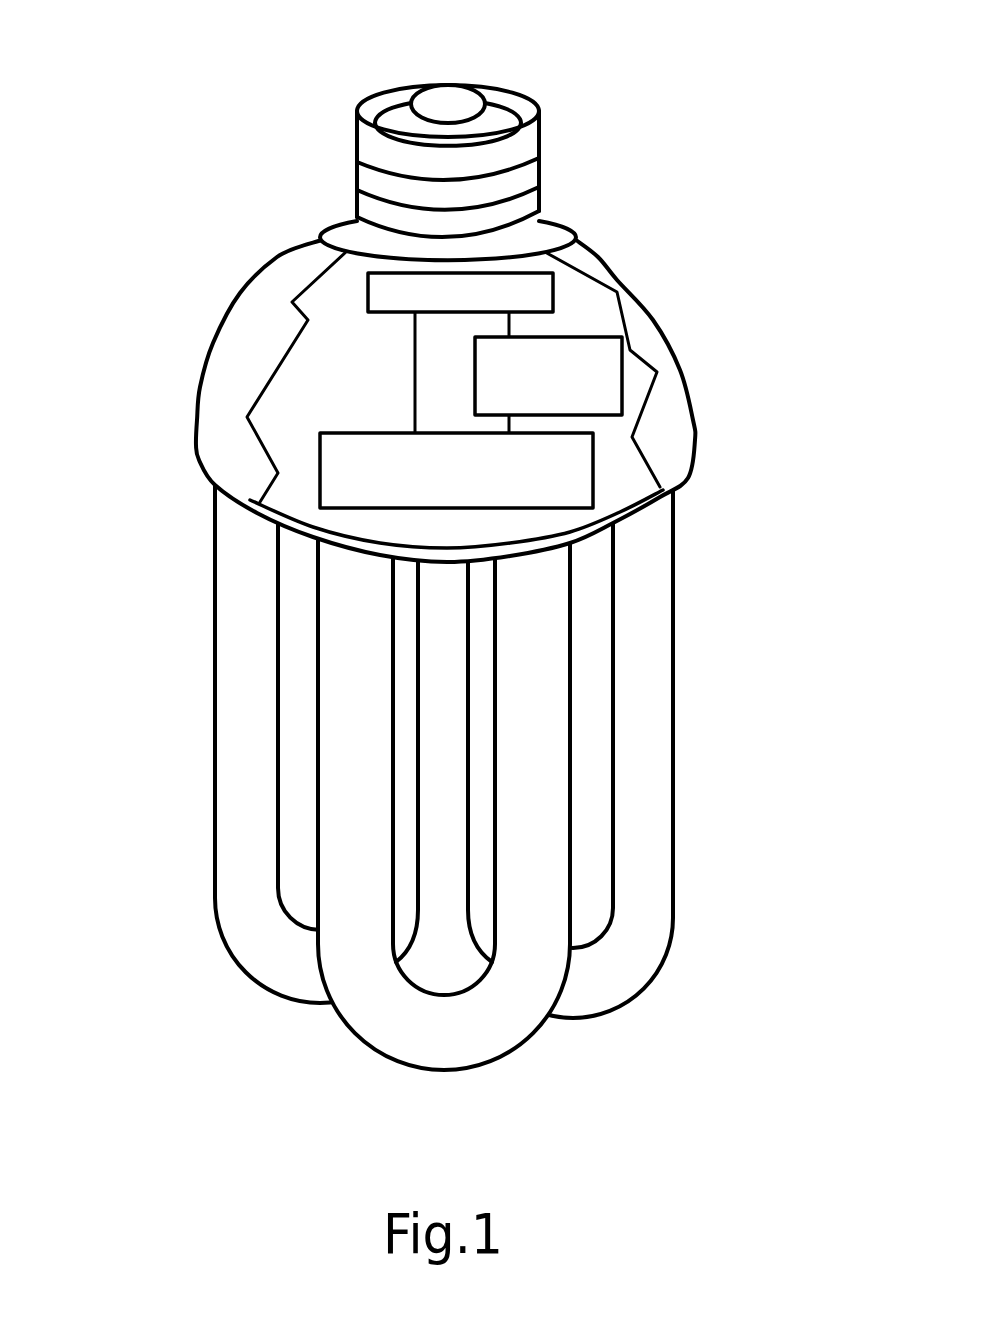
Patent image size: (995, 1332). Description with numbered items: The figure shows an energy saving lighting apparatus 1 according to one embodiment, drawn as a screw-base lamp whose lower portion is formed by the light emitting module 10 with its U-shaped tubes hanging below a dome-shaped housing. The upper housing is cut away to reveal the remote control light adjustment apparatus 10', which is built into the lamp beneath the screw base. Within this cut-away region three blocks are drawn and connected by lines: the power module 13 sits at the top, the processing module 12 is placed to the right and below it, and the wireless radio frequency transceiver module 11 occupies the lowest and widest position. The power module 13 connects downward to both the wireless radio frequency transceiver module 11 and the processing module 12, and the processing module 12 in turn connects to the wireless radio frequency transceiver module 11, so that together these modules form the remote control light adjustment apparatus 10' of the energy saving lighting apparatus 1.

The energy saving lighting apparatus 1 is at (394, 536).
The light emitting module 10 is at (368, 770).
The remote control light adjustment apparatus 10' is at (362, 401).
The wireless radio frequency transceiver module 11 is at (320, 465).
The processing module 12 is at (622, 338).
The power module 13 is at (368, 274).